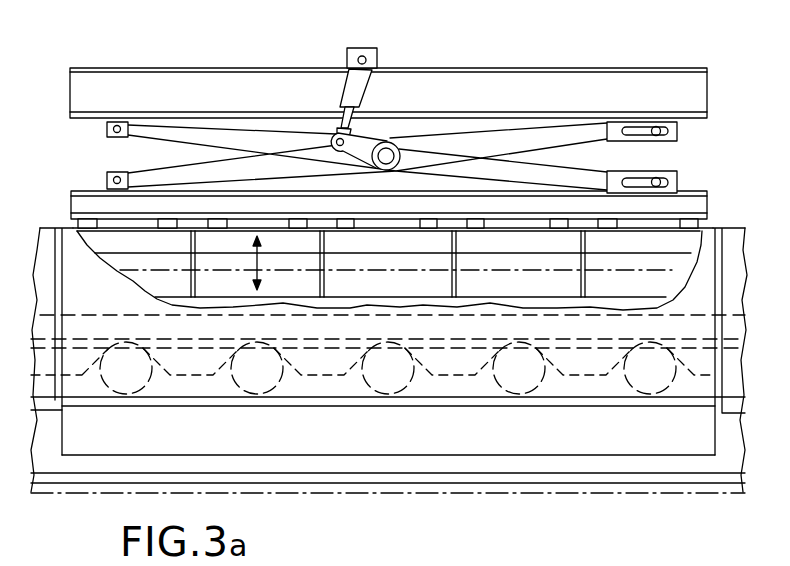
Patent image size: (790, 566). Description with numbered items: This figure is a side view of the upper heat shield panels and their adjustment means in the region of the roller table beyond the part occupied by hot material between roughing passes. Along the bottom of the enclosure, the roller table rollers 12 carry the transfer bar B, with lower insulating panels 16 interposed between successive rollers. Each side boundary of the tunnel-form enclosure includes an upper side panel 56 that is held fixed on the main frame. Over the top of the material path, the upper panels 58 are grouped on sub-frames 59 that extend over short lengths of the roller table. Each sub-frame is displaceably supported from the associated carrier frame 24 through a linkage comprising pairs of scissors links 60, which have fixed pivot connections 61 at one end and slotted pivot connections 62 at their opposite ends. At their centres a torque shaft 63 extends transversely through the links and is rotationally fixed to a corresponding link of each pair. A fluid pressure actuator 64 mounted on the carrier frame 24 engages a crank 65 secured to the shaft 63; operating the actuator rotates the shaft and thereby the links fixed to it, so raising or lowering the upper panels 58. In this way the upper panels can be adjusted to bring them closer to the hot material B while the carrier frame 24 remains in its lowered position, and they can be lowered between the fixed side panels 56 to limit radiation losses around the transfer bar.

The roller table rollers 12 is at (399, 378).
The lower insulating panels 16 is at (318, 370).
The transfer bar B is at (567, 330).
The carrier frame 24 is at (253, 93).
The upper side panel 56 is at (45, 245).
The upper panels 58 is at (126, 242).
The sub-frames 59 is at (657, 208).
The scissors links 60 is at (547, 172).
The fixed pivot connections 61 is at (123, 172).
The slotted pivot connections 62 is at (663, 180).
The torque shaft 63 is at (400, 154).
The fluid pressure actuator 64 is at (355, 90).
The crank 65 is at (372, 148).